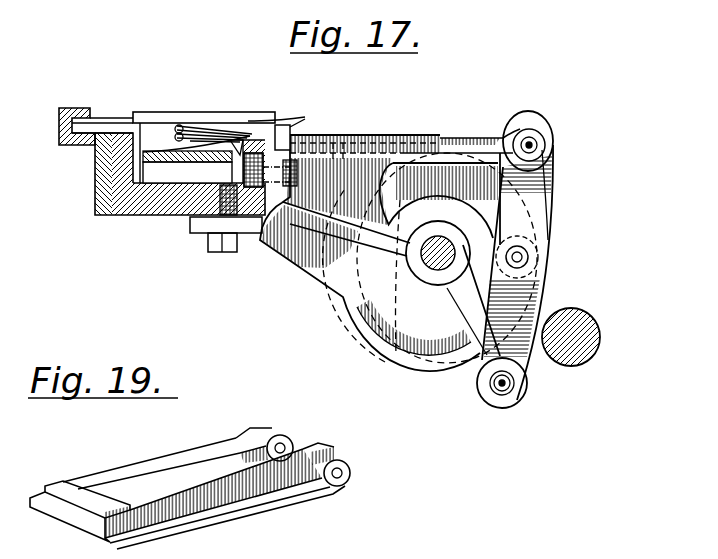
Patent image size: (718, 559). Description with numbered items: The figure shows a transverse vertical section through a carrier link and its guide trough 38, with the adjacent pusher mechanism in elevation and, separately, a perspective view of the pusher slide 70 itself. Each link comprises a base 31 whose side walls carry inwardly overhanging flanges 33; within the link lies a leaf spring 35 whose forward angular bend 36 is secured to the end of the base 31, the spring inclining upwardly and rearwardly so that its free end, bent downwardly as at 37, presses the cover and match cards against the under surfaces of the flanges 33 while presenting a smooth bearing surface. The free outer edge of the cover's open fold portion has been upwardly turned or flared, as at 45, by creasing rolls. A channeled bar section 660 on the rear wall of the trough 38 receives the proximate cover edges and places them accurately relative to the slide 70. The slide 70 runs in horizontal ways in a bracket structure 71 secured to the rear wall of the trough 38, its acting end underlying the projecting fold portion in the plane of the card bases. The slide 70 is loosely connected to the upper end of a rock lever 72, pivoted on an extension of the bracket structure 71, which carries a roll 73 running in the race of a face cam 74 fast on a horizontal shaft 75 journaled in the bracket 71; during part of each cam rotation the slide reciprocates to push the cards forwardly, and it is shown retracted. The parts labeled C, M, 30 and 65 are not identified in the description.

In FIG. 17, the channeled bar section 660 is at (55, 110).
In FIG. 17, the plate C is at (108, 118).
In FIG. 17, the inwardly overhanging flanges 33 is at (143, 112).
In FIG. 17, the leaf spring 35 is at (178, 145).
In FIG. 17, the blade M is at (215, 128).
In FIG. 17, the downwardly bent end 37 is at (243, 148).
In FIG. 17, the upwardly turned edge 45 is at (290, 126).
In FIG. 17, the bracket structure 71 is at (340, 170).
In FIG. 17, the pusher slide 70 is at (469, 136).
In FIG. 19, the pusher slide 70 is at (230, 481).
In FIG. 17, the rock lever 72 is at (556, 116).
In FIG. 17, the roll 73 is at (528, 252).
In FIG. 17, the face cam 74 is at (548, 273).
In FIG. 17, the roller 65 is at (591, 341).
In FIG. 17, the horizontal shaft 75 is at (436, 255).
In FIG. 17, the angular bend 36 is at (143, 170).
In FIG. 17, the block 30 is at (110, 203).
In FIG. 17, the guide trough 38 is at (155, 205).
In FIG. 17, the base 31 is at (197, 163).